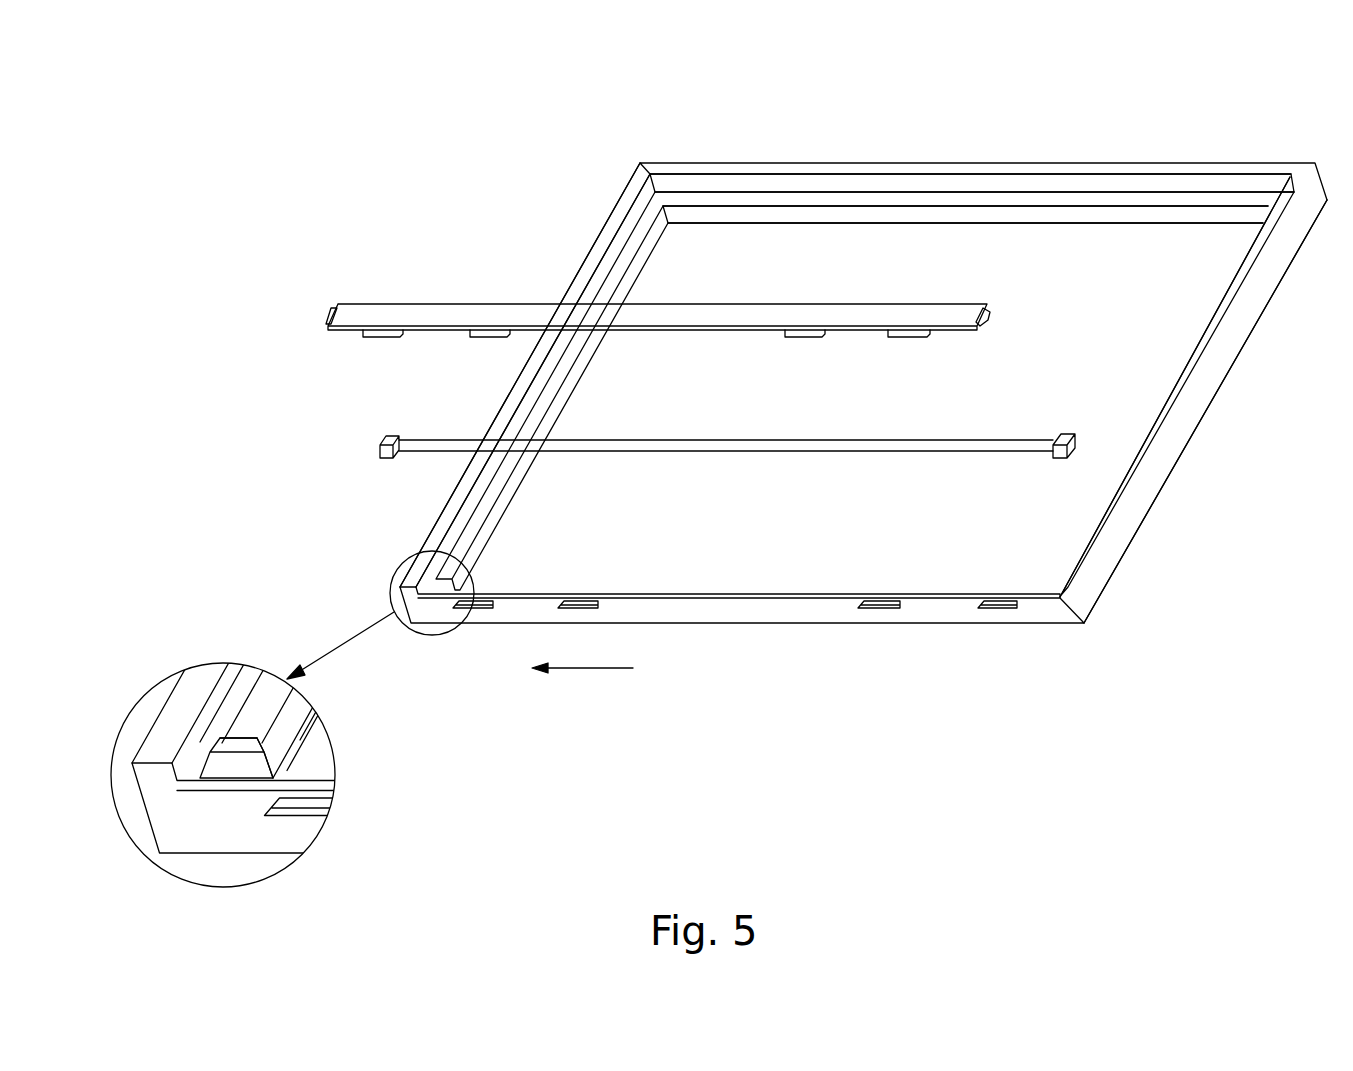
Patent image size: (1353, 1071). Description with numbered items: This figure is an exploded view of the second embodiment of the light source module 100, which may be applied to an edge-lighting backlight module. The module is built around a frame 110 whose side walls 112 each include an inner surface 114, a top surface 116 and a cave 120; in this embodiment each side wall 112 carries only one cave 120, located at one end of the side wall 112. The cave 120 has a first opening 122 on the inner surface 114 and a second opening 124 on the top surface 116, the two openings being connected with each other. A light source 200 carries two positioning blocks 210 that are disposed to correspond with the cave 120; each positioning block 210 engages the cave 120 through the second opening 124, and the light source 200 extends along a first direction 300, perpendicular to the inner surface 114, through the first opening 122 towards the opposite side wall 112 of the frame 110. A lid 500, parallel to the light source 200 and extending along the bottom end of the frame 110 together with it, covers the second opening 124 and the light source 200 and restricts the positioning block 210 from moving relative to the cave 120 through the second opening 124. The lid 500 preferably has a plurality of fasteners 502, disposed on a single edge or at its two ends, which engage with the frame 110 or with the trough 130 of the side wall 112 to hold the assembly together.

The light source module 100 is at (1336, 77).
The frame 110 is at (1122, 172).
The side wall 112 is at (611, 230).
The inner surface 114 is at (652, 238).
The top surface 116 is at (650, 213).
The cave 120 is at (236, 765).
The first opening 122 is at (258, 762).
The second opening 124 is at (240, 746).
The trough 130 is at (875, 603).
The light source 200 is at (445, 440).
The positioning block 210 is at (385, 438).
The first direction 300 is at (609, 669).
The lid 500 is at (437, 315).
The fastener 502 is at (330, 308).